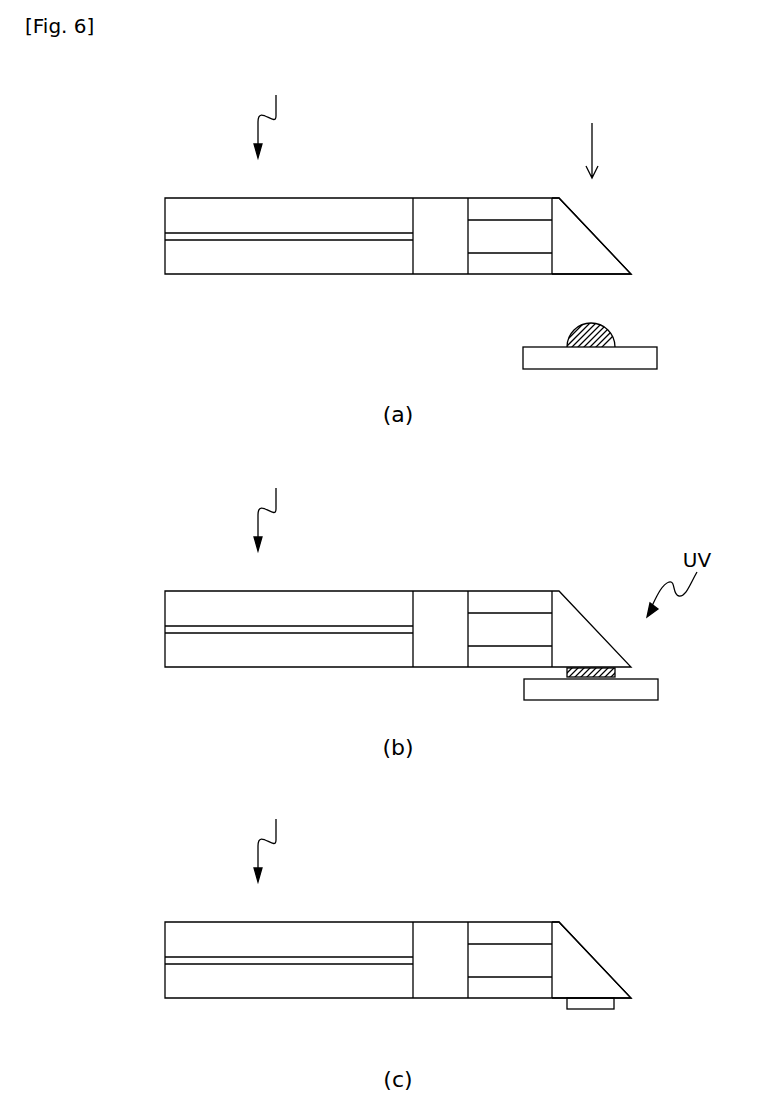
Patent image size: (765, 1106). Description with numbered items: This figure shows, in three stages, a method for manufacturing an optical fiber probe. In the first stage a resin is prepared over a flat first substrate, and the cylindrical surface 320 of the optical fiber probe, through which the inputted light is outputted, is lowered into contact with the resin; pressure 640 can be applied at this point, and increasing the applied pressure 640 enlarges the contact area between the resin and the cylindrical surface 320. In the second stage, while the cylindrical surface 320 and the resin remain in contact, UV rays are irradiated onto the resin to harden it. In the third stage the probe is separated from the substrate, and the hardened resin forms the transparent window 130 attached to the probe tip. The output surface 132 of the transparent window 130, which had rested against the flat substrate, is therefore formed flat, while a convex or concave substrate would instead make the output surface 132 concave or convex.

The pressure 640 is at (592, 140).
The cylindrical surface 320 is at (573, 275).
The transparent window 130 is at (616, 1001).
The output surface 132 is at (590, 1010).